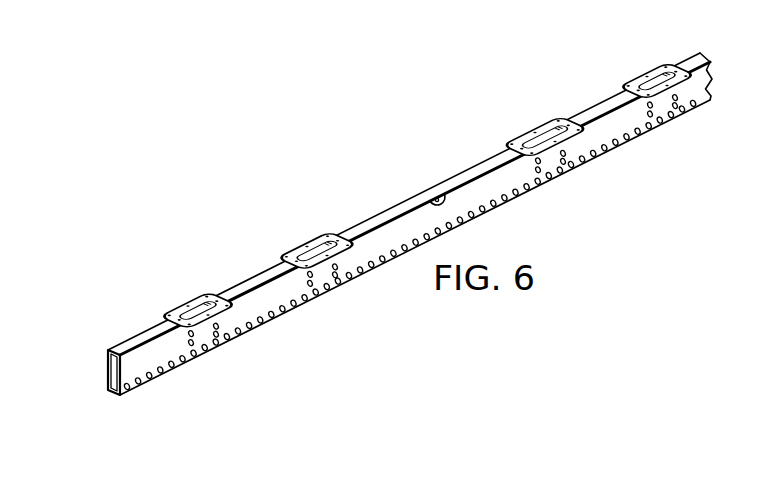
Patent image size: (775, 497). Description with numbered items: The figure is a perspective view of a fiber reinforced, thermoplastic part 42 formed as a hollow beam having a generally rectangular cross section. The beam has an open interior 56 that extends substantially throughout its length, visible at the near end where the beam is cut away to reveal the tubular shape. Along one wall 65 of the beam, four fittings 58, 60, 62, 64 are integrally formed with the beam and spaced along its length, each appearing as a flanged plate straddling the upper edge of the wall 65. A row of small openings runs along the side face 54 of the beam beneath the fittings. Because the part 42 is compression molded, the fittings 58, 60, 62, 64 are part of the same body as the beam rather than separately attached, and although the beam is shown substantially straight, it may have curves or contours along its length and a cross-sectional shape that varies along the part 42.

The hollow beam 42 is at (340, 138).
The front face with fastener holes 54 is at (612, 125).
The open interior 56 is at (103, 397).
The fitting 58 is at (190, 304).
The fitting 60 is at (320, 241).
The fitting 62 is at (540, 127).
The fitting 64 is at (690, 63).
The wall 65 is at (408, 208).